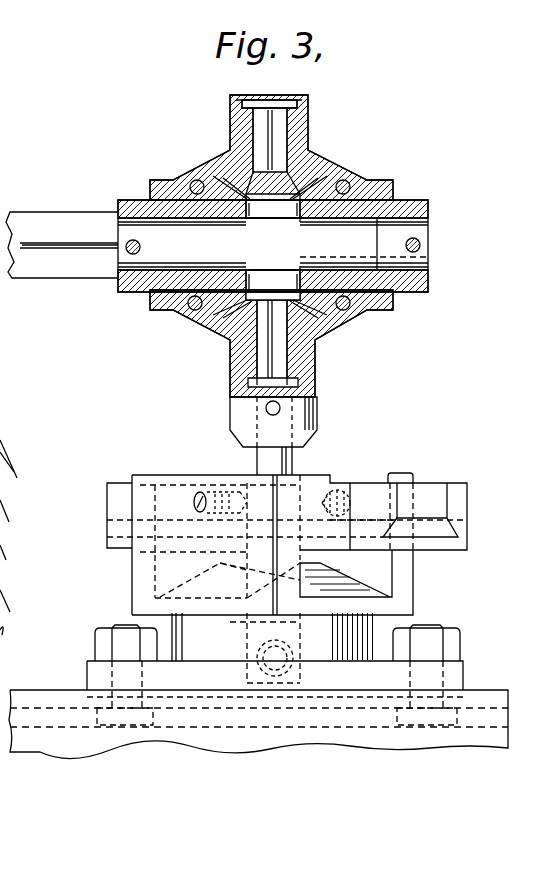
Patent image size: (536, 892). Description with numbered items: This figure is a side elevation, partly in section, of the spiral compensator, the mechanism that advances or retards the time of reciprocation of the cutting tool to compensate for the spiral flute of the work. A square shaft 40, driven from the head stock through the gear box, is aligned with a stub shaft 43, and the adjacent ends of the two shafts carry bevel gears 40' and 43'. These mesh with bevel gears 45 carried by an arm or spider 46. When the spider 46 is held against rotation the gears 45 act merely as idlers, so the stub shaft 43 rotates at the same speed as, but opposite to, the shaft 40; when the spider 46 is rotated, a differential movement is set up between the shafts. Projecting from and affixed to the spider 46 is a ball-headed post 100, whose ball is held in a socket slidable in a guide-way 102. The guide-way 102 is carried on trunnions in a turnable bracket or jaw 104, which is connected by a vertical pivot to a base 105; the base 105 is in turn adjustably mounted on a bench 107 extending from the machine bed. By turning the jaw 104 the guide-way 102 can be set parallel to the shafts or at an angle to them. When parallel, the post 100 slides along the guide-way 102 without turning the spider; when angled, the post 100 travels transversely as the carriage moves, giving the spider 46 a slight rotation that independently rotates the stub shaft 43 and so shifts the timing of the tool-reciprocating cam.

The square shaft 40 is at (92, 245).
The bevel gear 40' is at (271, 238).
The stub shaft 43 is at (290, 246).
The bevel gear 43' is at (308, 240).
The gears 45 is at (297, 170).
The spider 46 is at (317, 372).
The ball-headed post 100 is at (257, 460).
The guide-way 102 is at (458, 488).
The turnable bracket or jaw 104 is at (408, 590).
The base 105 is at (465, 667).
The bench 107 is at (487, 690).